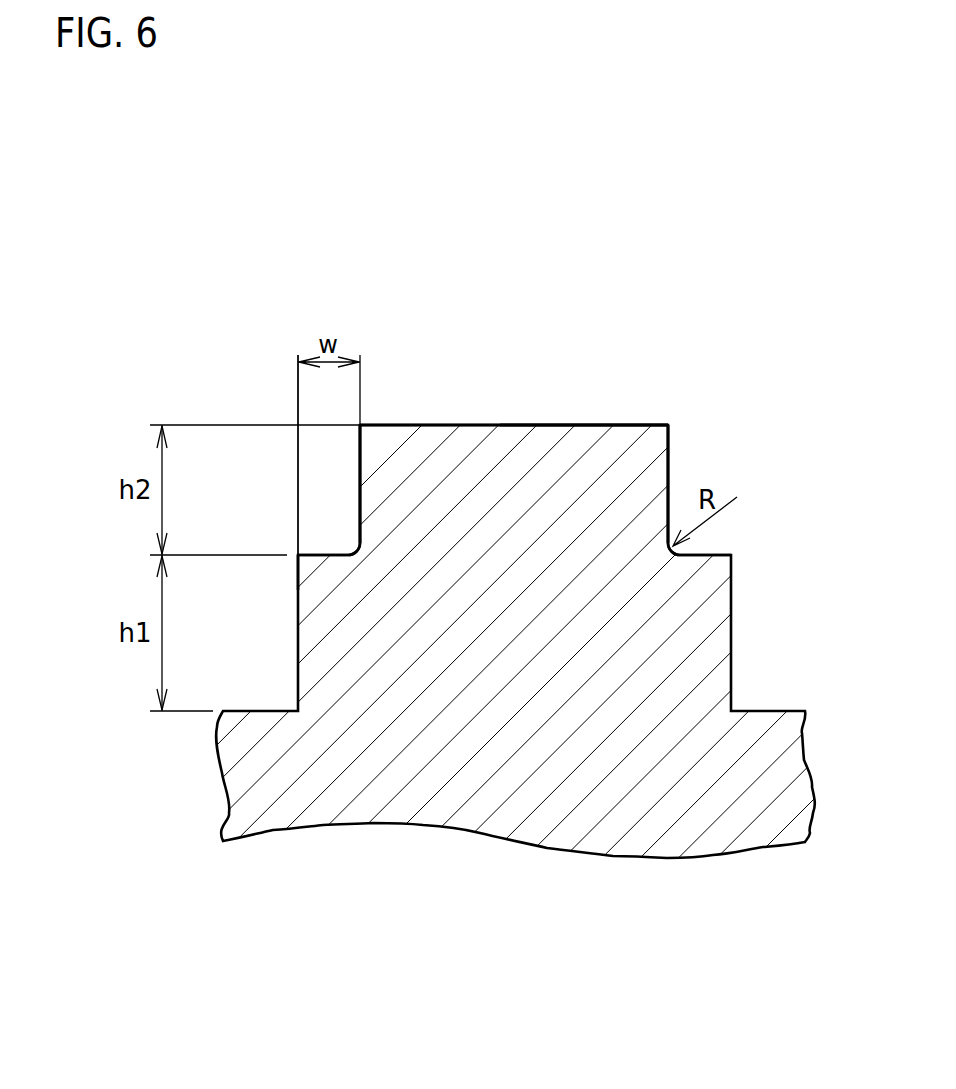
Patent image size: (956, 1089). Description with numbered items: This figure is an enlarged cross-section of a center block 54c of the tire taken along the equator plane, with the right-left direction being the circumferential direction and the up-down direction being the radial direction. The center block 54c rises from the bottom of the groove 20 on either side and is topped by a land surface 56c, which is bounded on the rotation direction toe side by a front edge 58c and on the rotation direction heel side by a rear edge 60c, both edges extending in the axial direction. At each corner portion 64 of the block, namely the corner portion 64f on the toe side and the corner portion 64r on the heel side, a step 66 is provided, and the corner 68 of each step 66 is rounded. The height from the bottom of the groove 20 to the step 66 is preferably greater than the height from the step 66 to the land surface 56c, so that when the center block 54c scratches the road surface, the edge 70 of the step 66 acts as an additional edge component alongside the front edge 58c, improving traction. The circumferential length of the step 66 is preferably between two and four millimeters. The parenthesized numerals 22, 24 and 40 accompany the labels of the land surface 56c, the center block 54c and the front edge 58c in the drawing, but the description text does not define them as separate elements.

The groove 20 is at (270, 692).
The first protruding portion 22 is at (514, 364).
The second protruding portion 24 is at (584, 377).
The side wall portion 40 is at (393, 441).
The center block 54c is at (490, 406).
The land surface 56c is at (563, 424).
The front edge 58c is at (363, 423).
The rear edge 60c is at (668, 424).
The corner portion 64 is at (503, 436).
The corner portion on rotation direction toe side 64f is at (325, 435).
The corner portion on rotation direction heel side 64r is at (735, 432).
The step 66 is at (310, 554).
The corner of step 68 is at (352, 548).
The edge of step 70 is at (298, 554).